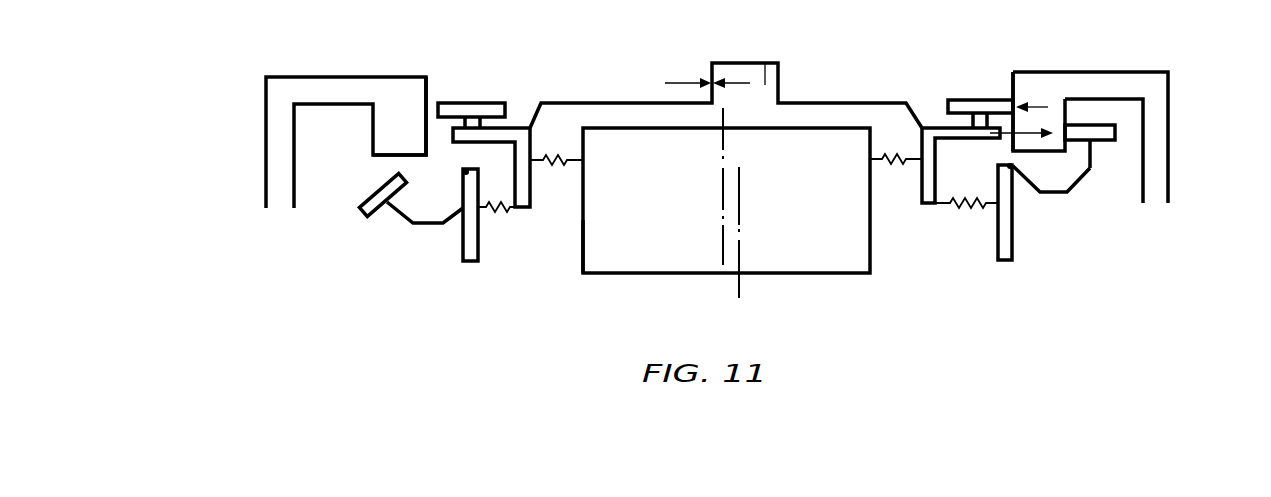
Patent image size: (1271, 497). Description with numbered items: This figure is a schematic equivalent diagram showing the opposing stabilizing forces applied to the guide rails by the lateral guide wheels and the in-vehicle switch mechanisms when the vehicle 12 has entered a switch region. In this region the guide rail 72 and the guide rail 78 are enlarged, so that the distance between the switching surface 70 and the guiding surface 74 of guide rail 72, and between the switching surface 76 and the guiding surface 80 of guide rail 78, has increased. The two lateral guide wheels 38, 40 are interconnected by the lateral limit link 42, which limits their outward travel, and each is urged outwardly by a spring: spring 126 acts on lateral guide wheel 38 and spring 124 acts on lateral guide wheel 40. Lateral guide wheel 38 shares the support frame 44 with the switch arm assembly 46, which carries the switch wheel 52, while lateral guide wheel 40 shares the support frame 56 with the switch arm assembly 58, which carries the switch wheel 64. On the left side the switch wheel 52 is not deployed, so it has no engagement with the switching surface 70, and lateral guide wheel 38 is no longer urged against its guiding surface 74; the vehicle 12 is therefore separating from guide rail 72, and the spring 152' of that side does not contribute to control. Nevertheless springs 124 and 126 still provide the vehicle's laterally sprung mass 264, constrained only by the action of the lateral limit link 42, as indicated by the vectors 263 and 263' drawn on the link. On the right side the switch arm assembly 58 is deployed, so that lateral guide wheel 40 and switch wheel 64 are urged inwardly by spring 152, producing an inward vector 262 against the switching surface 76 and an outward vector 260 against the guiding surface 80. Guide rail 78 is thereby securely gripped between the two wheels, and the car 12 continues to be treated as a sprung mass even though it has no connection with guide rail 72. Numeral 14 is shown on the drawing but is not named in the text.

The vehicle 12 is at (565, 287).
The housing bracket 14 is at (1192, 76).
The lateral guide wheel 38 is at (453, 107).
The lateral guide wheel 40 is at (960, 100).
The lateral limit link 42 is at (792, 80).
The support frame 44 is at (463, 250).
The switch arm assembly 46 is at (415, 227).
The switch wheel 52 is at (362, 205).
The support frame 56 is at (1012, 237).
The switch arm assembly 58 is at (1080, 182).
The switch wheel 64 is at (1115, 131).
The switching surface 70 is at (372, 136).
The guide rail 72 is at (392, 107).
The guiding surface 74 is at (427, 82).
The switching surface 76 is at (1068, 108).
The guide rail 78 is at (1033, 82).
The guiding surface 80 is at (1012, 83).
The spring 124 is at (885, 157).
The spring 126 is at (547, 156).
The spring 152 is at (954, 228).
The spring 152' is at (519, 239).
The outward vector 260 is at (1030, 133).
The inward vector 262 is at (1048, 105).
The vector 263 is at (675, 52).
The vector 263' is at (756, 49).
The laterally sprung mass 264 is at (828, 235).